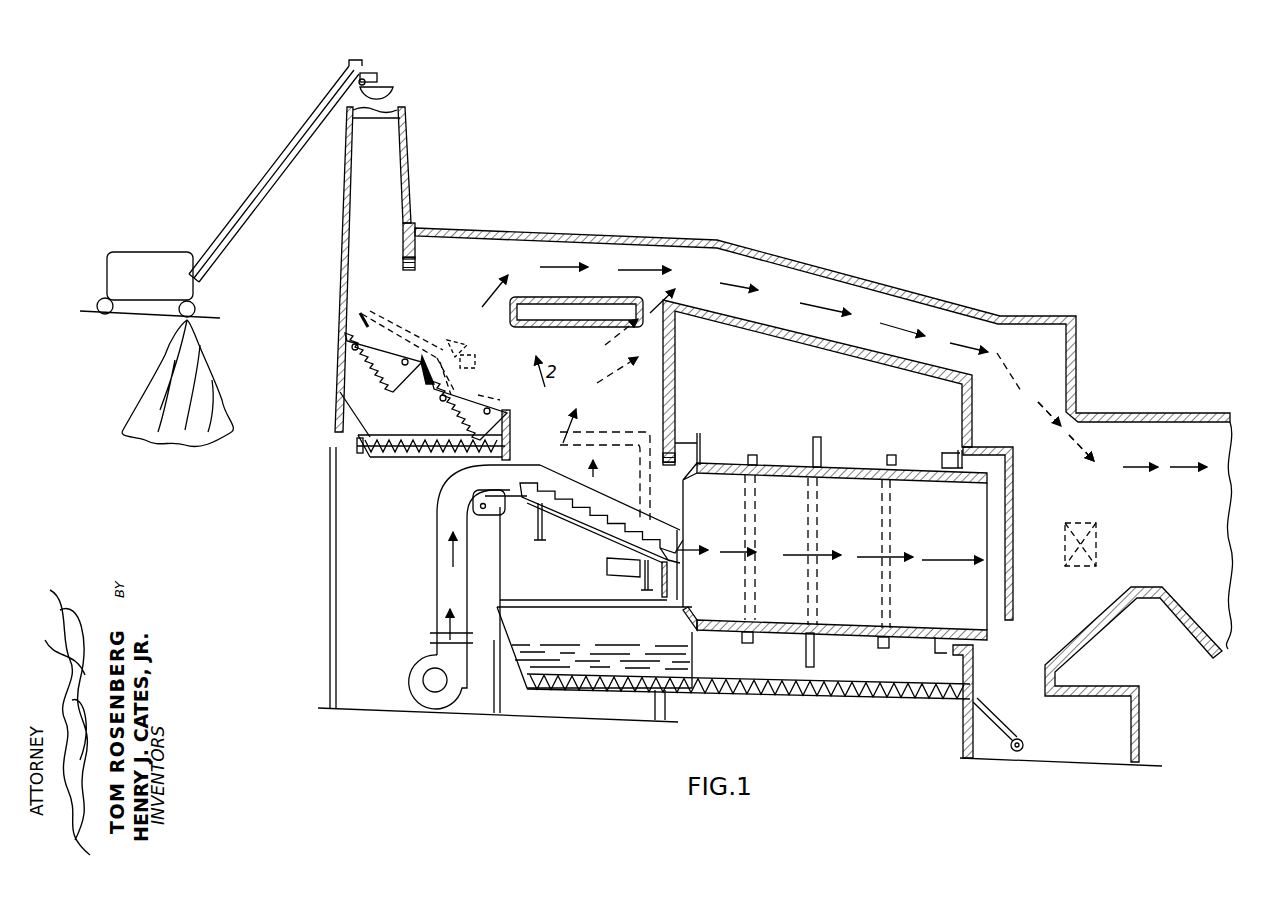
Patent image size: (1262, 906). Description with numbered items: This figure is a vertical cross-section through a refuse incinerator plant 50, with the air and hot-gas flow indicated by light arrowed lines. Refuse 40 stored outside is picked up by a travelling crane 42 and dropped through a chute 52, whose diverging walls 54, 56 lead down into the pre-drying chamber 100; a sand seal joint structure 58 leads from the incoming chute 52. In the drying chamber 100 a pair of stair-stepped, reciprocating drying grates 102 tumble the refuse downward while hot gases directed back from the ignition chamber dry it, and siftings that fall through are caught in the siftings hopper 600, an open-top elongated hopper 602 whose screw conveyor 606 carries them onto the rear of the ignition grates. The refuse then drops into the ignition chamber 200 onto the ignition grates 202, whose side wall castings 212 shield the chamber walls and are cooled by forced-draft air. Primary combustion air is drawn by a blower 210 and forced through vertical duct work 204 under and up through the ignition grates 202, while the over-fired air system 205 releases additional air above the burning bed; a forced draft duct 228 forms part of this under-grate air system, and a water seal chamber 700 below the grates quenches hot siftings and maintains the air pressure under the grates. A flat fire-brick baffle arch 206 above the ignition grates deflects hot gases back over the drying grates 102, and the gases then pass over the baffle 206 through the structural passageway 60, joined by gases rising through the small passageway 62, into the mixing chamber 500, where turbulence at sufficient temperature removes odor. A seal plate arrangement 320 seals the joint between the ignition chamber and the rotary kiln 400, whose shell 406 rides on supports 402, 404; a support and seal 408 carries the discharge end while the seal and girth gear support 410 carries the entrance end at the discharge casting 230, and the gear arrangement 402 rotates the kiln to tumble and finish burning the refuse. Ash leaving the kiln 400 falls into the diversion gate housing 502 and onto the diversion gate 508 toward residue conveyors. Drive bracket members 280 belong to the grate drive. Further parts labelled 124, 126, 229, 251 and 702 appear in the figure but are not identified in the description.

The refuse 40 is at (152, 386).
The travelling crane 42 is at (233, 232).
The plant 50 is at (515, 227).
The chute 52 is at (392, 111).
The diverging wall 54 is at (344, 171).
The diverging wall 56 is at (408, 176).
The sand seal joint structure 58 is at (417, 213).
The structural passageway 60 is at (802, 287).
The small passageway 62 is at (674, 303).
The drying chamber 100 is at (382, 288).
The drying grates 102 is at (402, 345).
The spray nozzle 124 is at (470, 360).
The spray 126 is at (458, 350).
The ignition chamber 200 is at (609, 518).
The ignition grates 202 is at (627, 510).
The duct work 204 is at (440, 549).
The over fired air system 205 is at (630, 425).
The baffle arch 206 is at (570, 300).
The blower 210 is at (410, 674).
The side wall castings 212 is at (582, 499).
The forced draft duct 228 is at (617, 556).
The support block 229 is at (606, 568).
The discharge casting 230 is at (672, 590).
The discharge end 251 is at (632, 526).
The drive bracket members 280 is at (450, 500).
The seal plate arrangement 320 is at (701, 440).
The rotary kiln 400 is at (832, 551).
The gear arrangement 402 is at (817, 643).
The support 404 is at (755, 454).
The shell 406 is at (822, 452).
The support and seal 408 is at (967, 467).
The seal and girth gear support 410 is at (689, 612).
The mixing chamber 500 is at (1190, 456).
The diversion gate housing 502 is at (1022, 681).
The diversion gate 508 is at (1012, 727).
The siftings hopper 600 is at (428, 451).
The hopper 602 is at (400, 436).
The screw conveyor 606 is at (438, 446).
The water seal chamber 700 is at (733, 663).
The screw conveyor 702 is at (674, 678).